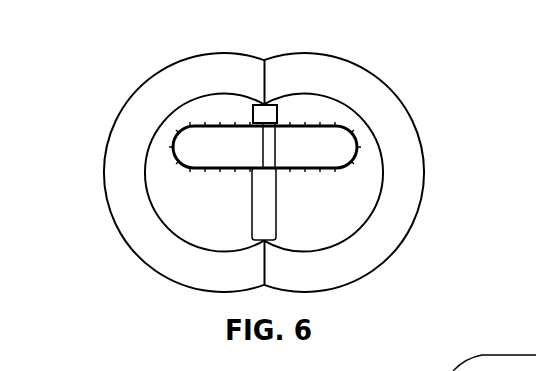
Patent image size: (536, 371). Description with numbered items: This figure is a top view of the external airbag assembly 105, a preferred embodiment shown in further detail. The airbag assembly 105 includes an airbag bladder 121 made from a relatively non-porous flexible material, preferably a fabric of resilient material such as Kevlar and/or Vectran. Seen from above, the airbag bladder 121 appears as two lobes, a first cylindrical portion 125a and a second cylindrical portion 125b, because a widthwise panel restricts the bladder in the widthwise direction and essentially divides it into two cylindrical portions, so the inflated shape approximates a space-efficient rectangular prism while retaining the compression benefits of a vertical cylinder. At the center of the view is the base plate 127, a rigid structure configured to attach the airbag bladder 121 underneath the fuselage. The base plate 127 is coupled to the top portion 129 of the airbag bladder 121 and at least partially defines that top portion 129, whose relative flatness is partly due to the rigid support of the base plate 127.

The airbag assembly 105 is at (129, 290).
The airbag bladder 121 is at (408, 115).
The first cylindrical portion 125a is at (340, 58).
The second cylindrical portion 125b is at (193, 55).
The base plate 127 is at (179, 128).
The top portion 129 is at (343, 202).